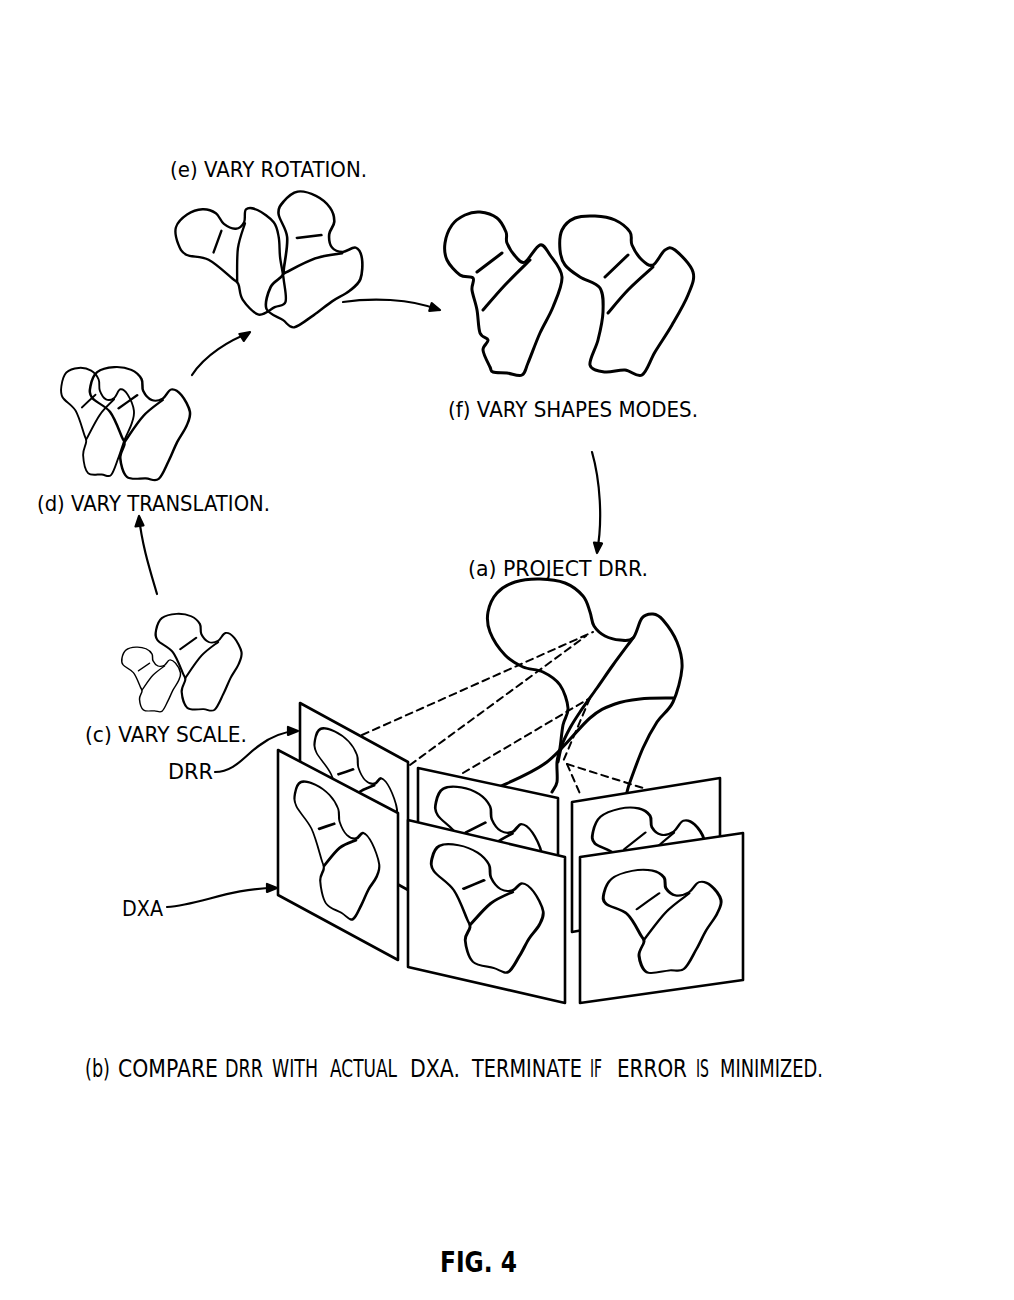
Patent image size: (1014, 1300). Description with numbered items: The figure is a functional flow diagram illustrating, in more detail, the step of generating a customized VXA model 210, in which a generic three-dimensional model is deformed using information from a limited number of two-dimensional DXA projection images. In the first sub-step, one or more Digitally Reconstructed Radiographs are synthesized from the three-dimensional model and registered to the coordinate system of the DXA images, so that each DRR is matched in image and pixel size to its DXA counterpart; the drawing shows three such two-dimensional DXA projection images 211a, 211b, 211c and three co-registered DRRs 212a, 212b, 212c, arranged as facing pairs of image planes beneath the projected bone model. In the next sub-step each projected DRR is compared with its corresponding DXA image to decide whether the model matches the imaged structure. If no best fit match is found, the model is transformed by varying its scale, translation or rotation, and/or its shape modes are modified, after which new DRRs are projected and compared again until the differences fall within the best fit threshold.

The step of generating a customized VXA model 210 is at (223, 58).
The 2D DXA projection image 211a is at (306, 912).
The 2D DXA projection image 211b is at (426, 970).
The 2D DXA projection image 211c is at (720, 980).
The co-registered DRR 212a is at (340, 722).
The co-registered DRR 212b is at (640, 699).
The co-registered DRR 212c is at (690, 782).